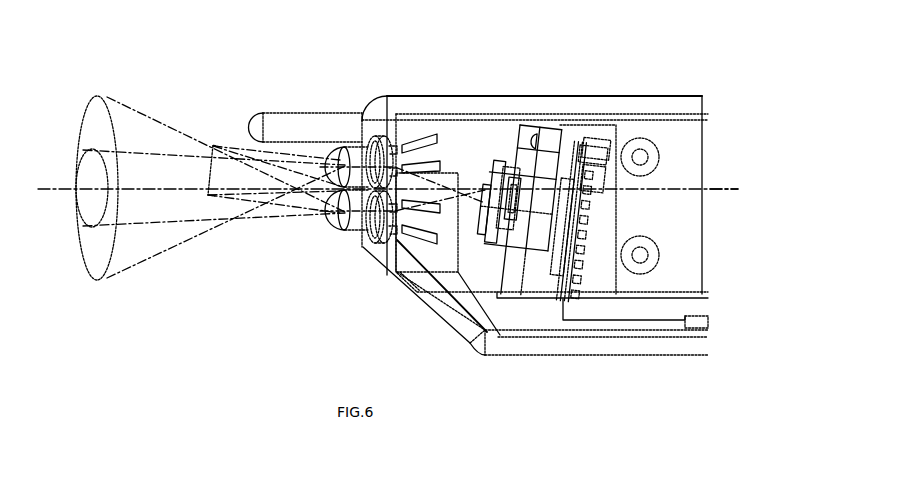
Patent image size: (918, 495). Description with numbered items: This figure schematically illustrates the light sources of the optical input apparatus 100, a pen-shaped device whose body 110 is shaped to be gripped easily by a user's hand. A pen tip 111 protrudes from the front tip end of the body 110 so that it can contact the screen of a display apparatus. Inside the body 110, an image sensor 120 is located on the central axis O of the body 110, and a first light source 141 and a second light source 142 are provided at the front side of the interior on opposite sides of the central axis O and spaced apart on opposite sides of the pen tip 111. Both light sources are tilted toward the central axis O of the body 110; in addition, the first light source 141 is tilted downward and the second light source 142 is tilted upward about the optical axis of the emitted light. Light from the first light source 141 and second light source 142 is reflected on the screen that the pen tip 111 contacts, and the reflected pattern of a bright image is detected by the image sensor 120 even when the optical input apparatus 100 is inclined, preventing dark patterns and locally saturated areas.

The optical input apparatus 100 is at (147, 54).
The pen tip 111 is at (307, 112).
The body 110 is at (663, 97).
The first light source 141 is at (380, 130).
The second light source 142 is at (386, 246).
The image sensor 120 is at (535, 242).
The central axis O is at (723, 185).